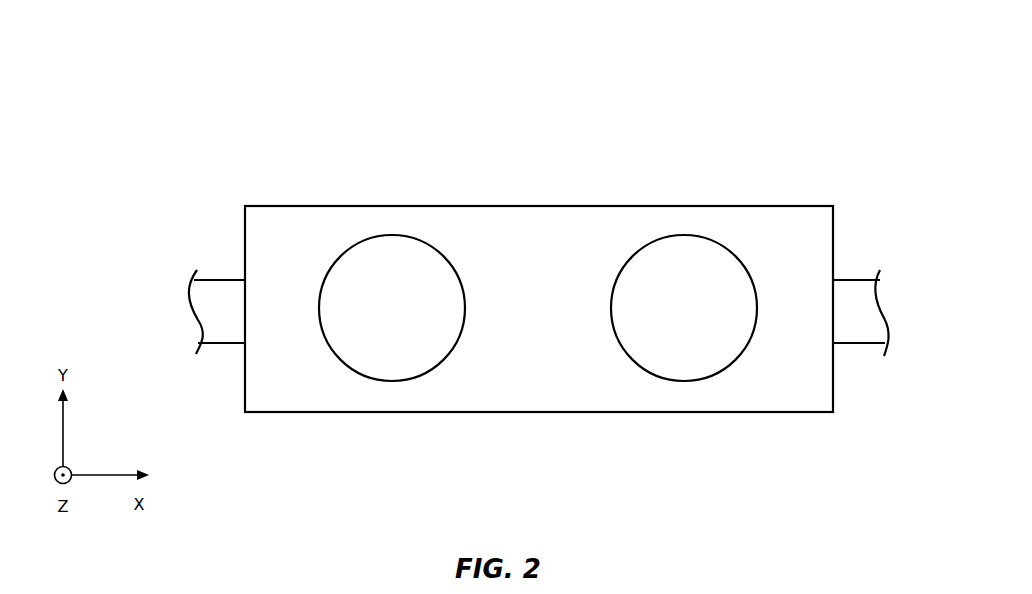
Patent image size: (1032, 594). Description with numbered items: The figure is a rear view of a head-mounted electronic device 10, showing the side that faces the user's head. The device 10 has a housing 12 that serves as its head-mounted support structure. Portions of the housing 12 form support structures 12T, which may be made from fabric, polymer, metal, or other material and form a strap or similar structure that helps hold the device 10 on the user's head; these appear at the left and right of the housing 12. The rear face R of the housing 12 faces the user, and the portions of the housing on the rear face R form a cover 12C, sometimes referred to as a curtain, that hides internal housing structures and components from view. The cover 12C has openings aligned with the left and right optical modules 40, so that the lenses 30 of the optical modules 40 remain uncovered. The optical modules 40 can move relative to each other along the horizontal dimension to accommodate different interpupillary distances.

The electronic device 10 is at (808, 82).
The housing 12 is at (805, 205).
The cover 12C is at (560, 405).
The support structures 12T is at (213, 290).
The lens 30 is at (397, 257).
The optical modules 40 is at (344, 253).
The rear face R is at (330, 378).